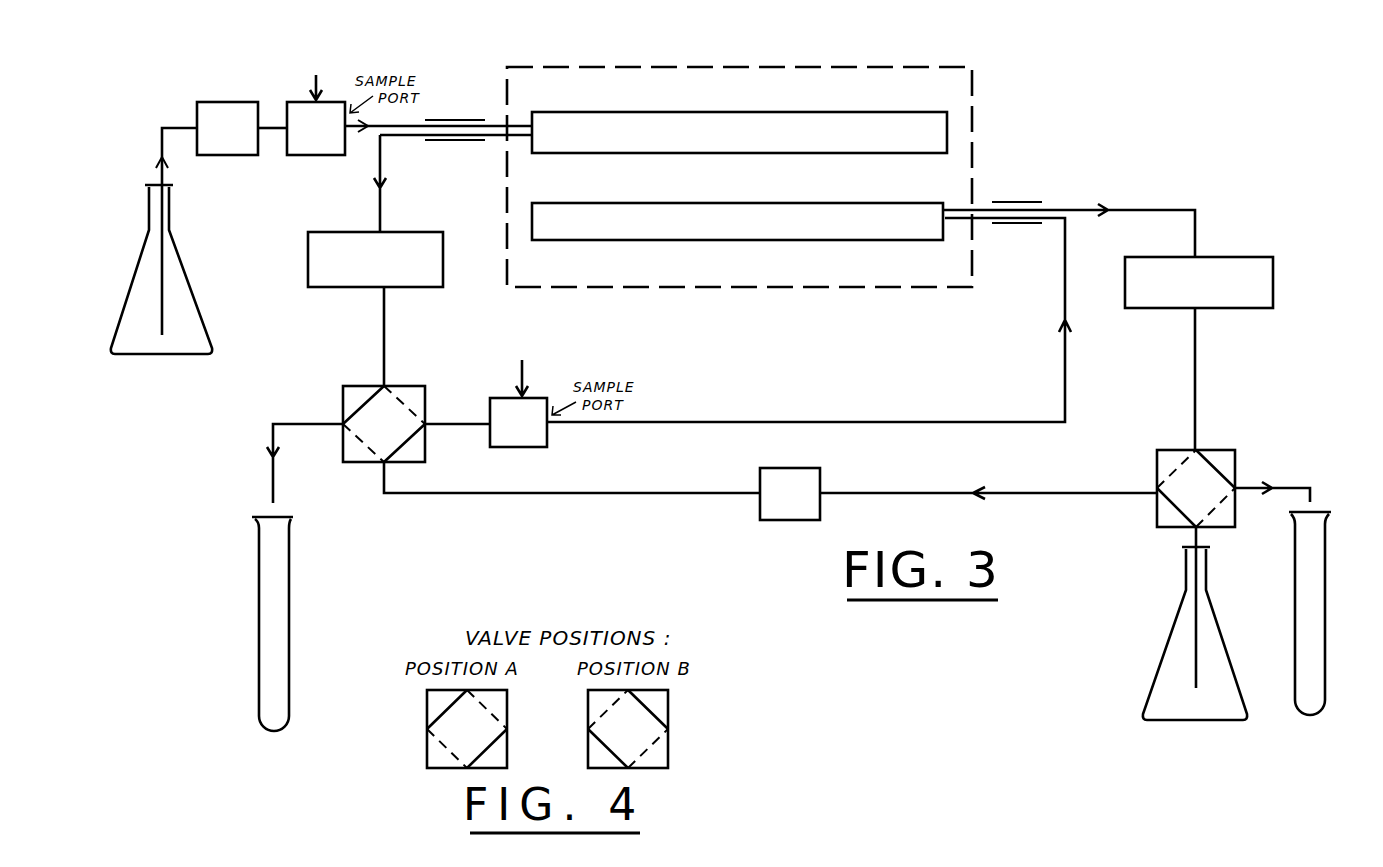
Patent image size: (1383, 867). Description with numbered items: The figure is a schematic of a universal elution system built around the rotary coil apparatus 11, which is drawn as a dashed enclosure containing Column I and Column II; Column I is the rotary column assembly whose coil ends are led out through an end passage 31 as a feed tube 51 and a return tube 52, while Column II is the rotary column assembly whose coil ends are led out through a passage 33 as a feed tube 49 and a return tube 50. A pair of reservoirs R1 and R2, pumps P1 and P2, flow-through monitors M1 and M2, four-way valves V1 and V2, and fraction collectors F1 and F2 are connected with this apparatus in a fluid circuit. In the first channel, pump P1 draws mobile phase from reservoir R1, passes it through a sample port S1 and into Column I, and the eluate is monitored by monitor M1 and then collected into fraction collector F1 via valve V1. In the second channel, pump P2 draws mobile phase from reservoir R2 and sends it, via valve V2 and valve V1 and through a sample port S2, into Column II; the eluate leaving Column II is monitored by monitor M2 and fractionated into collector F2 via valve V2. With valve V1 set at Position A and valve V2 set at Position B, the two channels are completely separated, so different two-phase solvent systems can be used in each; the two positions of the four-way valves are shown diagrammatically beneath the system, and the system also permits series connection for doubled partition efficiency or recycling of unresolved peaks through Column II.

The apparatus 11 is at (912, 62).
The end passage 31 is at (445, 120).
The passage 33 is at (1007, 200).
The feed tube 49 is at (982, 220).
The return tube 50 is at (1072, 206).
The feed tube 51 is at (513, 118).
The return tube 52 is at (495, 140).
The pump P1 is at (227, 128).
The pump P2 is at (790, 494).
The sample port S1 is at (316, 115).
The sample port S2 is at (518, 403).
The reservoir R1 is at (200, 297).
The reservoir R2 is at (1150, 684).
The flow-through monitor M1 is at (375, 259).
The flow-through monitor M2 is at (1199, 282).
The 4-way valve V1 is at (343, 400).
The 4-way valve V2 is at (1153, 507).
The fraction collector F1 is at (258, 588).
The fraction collector F2 is at (1327, 582).